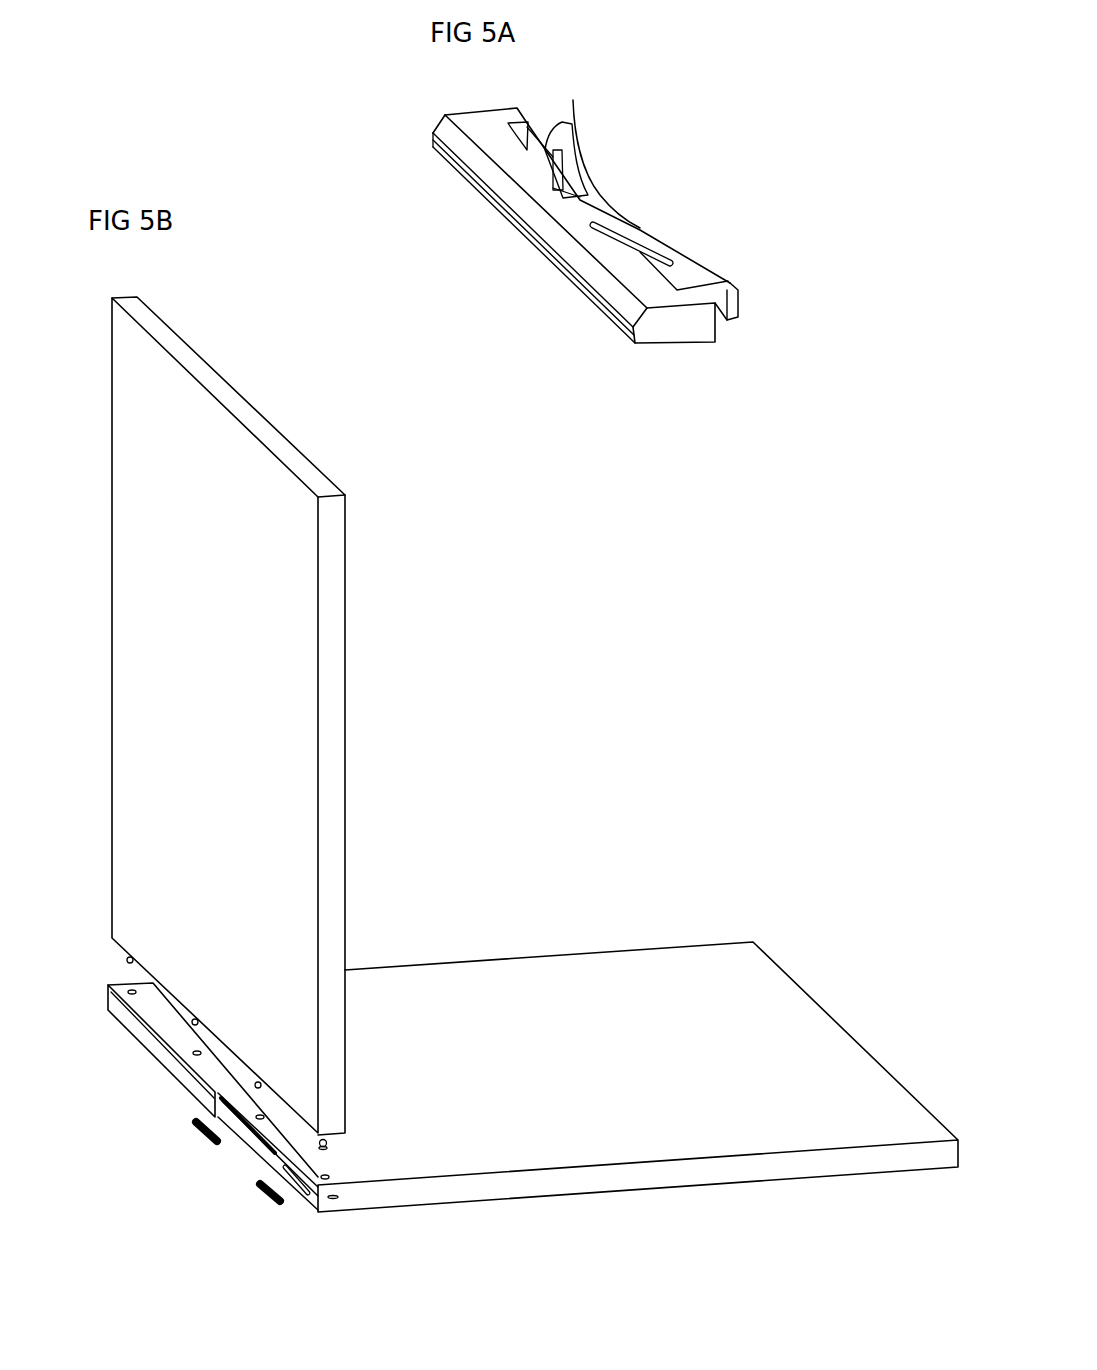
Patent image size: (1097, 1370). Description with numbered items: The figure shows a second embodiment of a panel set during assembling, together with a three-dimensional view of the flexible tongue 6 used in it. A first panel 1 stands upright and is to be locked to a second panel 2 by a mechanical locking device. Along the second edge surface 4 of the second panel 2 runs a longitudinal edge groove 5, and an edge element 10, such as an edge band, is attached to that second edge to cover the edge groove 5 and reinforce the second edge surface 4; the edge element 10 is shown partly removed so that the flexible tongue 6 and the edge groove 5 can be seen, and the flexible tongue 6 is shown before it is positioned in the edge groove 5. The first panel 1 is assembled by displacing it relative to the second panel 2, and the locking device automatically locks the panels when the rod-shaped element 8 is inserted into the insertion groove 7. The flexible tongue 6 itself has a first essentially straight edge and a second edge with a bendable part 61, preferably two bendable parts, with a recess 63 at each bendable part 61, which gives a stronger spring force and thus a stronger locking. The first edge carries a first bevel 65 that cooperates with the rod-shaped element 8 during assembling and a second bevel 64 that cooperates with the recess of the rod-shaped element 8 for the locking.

In FIG. 5B, the first panel 1 is at (385, 625).
In FIG. 5B, the second panel 2 is at (818, 941).
In FIG. 5B, the second edge surface 4 is at (267, 1145).
In FIG. 5B, the edge groove 5 is at (308, 1194).
In FIG. 5A, the flexible tongue 6 is at (584, 212).
In FIG. 5B, the flexible tongue 6 is at (272, 1203).
In FIG. 5B, the insertion groove 7 is at (335, 1177).
In FIG. 5B, the rod-shaped element 8 is at (330, 1145).
In FIG. 5B, the edge element 10 is at (147, 1035).
In FIG. 5A, the bendable part 61 is at (575, 128).
In FIG. 5A, the recess 63 is at (545, 148).
In FIG. 5A, the second bevel 64 is at (645, 347).
In FIG. 5A, the first bevel 65 is at (517, 193).